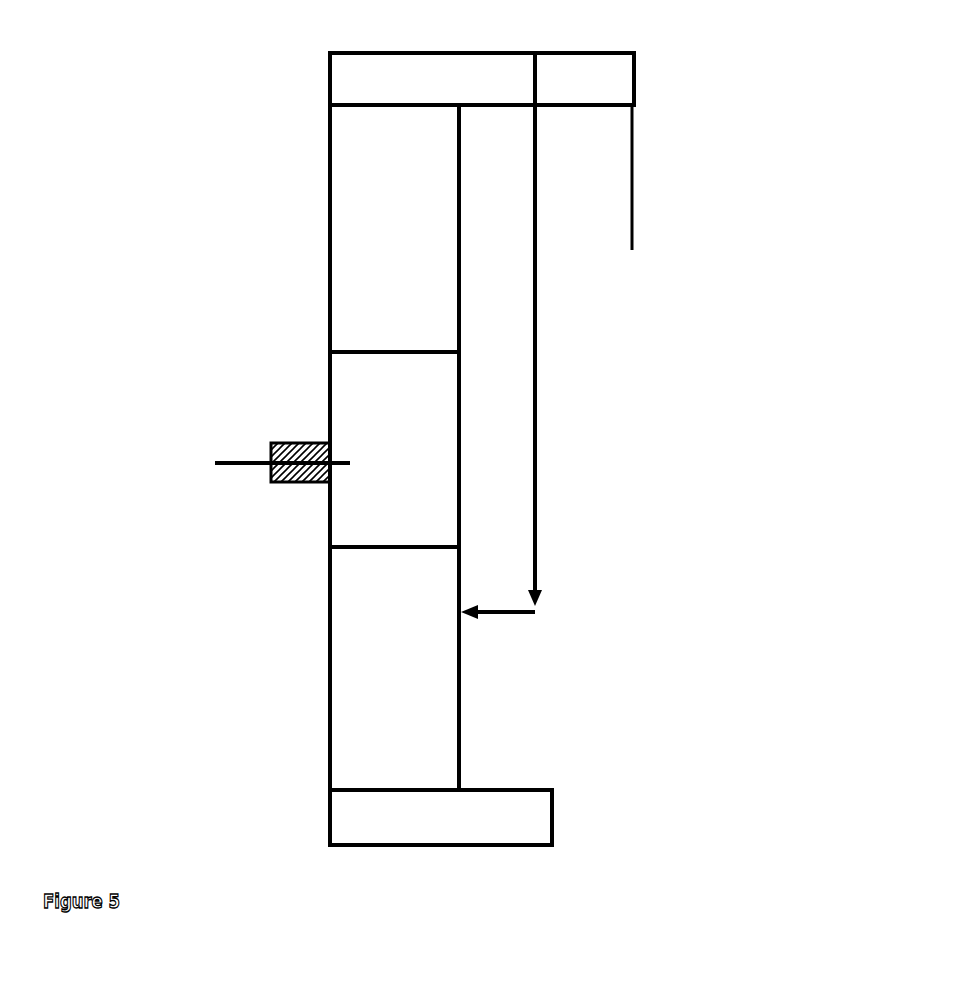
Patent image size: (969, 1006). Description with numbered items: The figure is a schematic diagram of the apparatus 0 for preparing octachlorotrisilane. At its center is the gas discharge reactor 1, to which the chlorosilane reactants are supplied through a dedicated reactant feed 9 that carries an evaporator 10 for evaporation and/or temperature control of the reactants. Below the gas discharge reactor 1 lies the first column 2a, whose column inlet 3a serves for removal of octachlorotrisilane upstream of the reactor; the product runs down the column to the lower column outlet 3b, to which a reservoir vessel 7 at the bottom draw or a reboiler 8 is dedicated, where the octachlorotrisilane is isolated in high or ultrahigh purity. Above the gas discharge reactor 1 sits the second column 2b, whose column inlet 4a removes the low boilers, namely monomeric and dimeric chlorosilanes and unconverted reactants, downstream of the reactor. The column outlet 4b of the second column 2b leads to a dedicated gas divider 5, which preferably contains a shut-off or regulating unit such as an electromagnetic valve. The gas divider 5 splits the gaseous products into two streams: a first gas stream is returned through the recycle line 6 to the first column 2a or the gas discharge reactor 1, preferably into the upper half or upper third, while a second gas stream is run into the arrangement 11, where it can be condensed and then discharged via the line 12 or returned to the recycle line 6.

The apparatus 0 is at (688, 547).
The gas discharge reactor 1 is at (394, 485).
The first column 2a is at (394, 717).
The second column 2b is at (394, 281).
The column inlet of the first column 3a is at (347, 572).
The lower column outlet of the first column 3b is at (347, 773).
The column inlet of the second column 4a is at (345, 317).
The column outlet of the second column 4b is at (342, 123).
The gas divider 5 is at (482, 79).
The recycle line 6 is at (537, 317).
The reservoir vessel 7 is at (441, 817).
The reboiler 8 is at (441, 817).
The reactant feed 9 is at (215, 462).
The evaporator 10 is at (298, 443).
The arrangement 11 is at (637, 78).
The line 12 is at (637, 182).